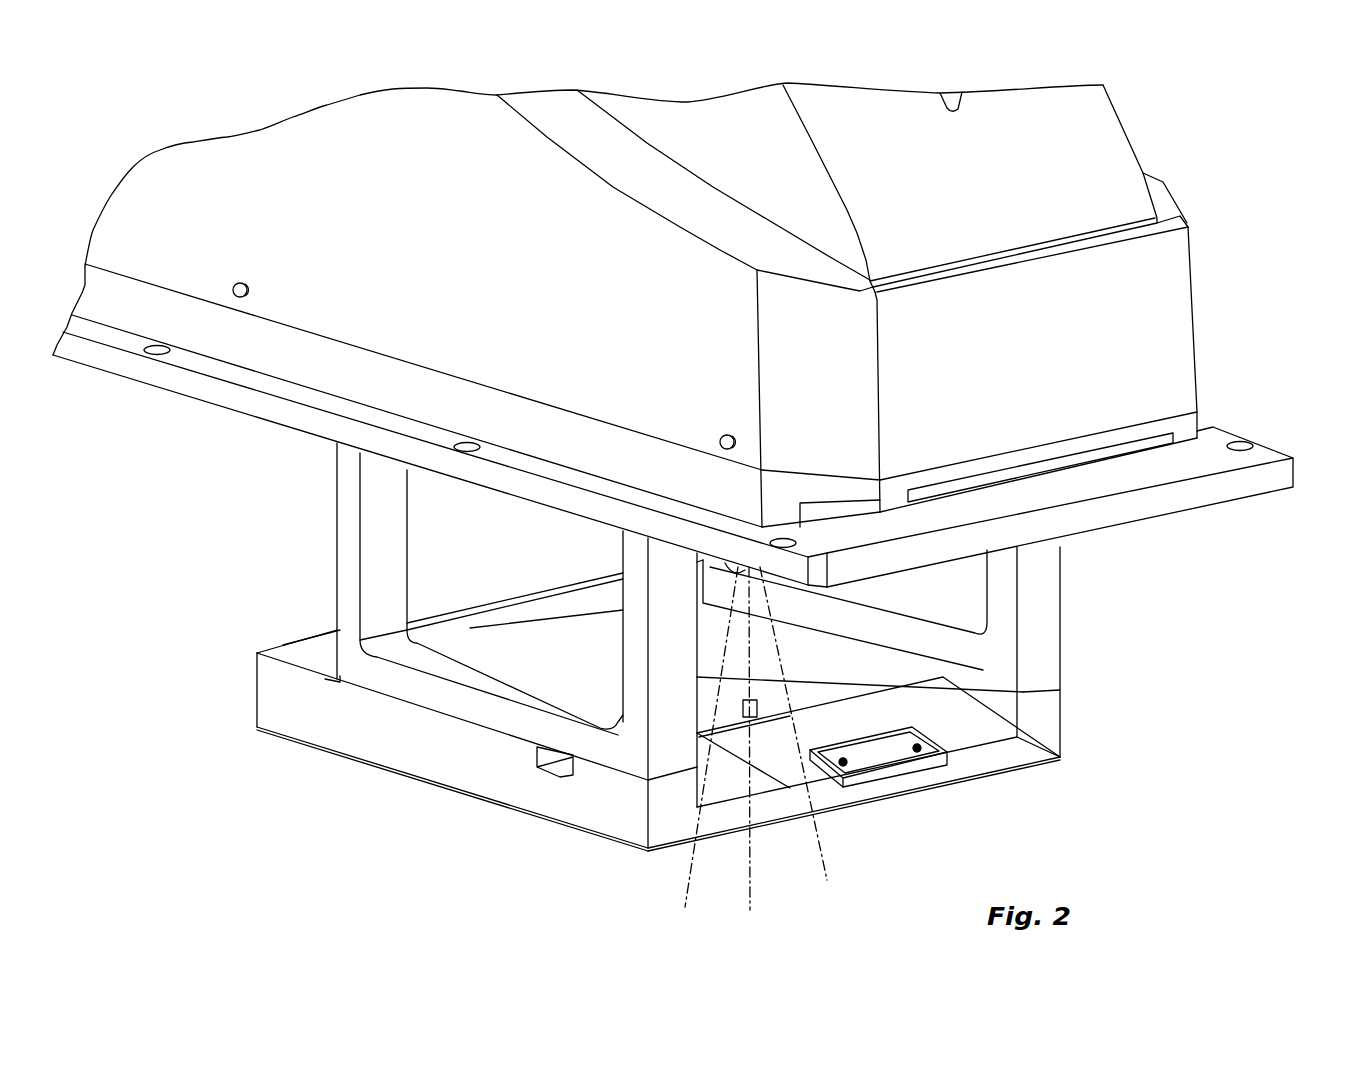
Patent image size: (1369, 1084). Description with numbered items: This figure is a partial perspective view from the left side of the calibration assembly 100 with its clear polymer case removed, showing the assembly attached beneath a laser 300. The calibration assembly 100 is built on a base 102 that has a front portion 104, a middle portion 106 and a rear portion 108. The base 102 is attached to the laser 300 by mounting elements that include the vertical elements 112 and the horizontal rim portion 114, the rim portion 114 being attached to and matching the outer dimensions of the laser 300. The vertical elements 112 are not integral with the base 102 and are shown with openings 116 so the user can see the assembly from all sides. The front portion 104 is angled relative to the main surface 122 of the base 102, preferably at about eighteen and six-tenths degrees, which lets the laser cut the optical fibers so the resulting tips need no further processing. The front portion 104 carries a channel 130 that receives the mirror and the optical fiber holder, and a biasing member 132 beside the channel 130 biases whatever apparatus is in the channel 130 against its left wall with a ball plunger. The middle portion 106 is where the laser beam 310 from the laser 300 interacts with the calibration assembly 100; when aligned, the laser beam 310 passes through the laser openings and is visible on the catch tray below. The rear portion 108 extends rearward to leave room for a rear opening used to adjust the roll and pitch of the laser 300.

The calibration assembly 100 is at (1293, 450).
The base 102 is at (380, 748).
The front portion 104 is at (975, 730).
The middle portion 106 is at (590, 838).
The rear portion 108 is at (492, 862).
The vertical elements 112 is at (348, 592).
The horizontal rim portion 114 is at (223, 392).
The openings 116 is at (440, 547).
The main surface 122 is at (290, 654).
The channel 130 is at (807, 777).
The biasing member 132 is at (933, 767).
The laser 300 is at (1183, 323).
The laser beam 310 is at (817, 840).